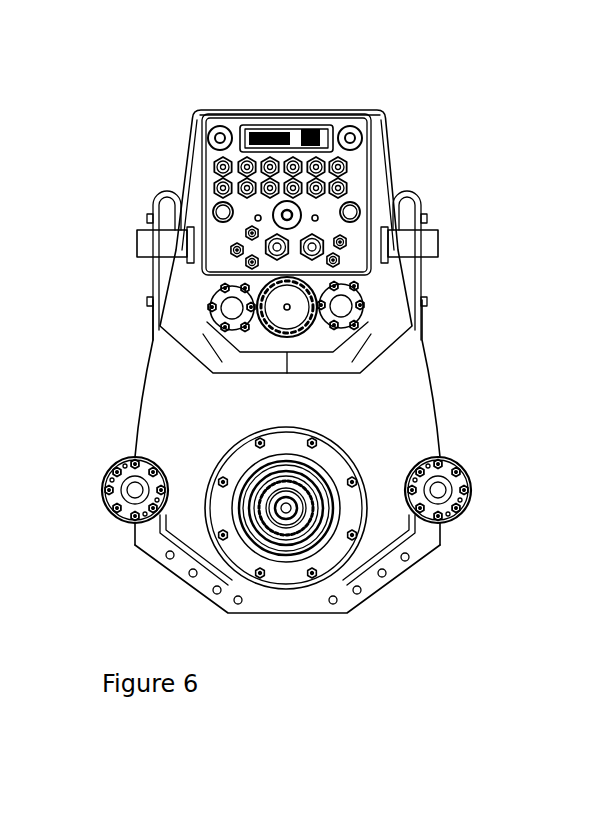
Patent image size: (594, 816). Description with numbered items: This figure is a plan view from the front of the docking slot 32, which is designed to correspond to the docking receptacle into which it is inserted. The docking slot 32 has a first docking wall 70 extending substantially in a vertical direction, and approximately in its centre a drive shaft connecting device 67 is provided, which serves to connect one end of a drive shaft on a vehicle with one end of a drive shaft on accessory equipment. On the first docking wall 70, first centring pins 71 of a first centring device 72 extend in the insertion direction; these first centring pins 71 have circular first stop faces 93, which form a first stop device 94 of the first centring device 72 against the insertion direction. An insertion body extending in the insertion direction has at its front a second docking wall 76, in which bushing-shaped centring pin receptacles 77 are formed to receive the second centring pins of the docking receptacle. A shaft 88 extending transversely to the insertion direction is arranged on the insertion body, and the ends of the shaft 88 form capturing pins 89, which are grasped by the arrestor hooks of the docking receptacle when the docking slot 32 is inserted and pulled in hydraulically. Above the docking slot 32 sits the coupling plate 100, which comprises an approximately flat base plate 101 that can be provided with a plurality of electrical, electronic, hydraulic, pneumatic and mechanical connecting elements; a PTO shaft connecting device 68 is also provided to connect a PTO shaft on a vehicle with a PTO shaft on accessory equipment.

The coupling plate 100 is at (364, 154).
The PTO shaft connecting device 68 is at (342, 240).
The base plate 101 is at (205, 197).
The shaft 88 is at (422, 242).
The capturing pins 89 is at (422, 242).
The centring pin receptacles 77 is at (232, 307).
The second docking wall 76 is at (300, 300).
The first docking wall 70 is at (287, 422).
The first centring pins 71 is at (460, 500).
The first centring device 72 is at (460, 500).
The first stop faces 93 is at (452, 517).
The first stop device 94 is at (452, 517).
The drive shaft connecting device 67 is at (325, 537).
The docking slot 32 is at (112, 578).